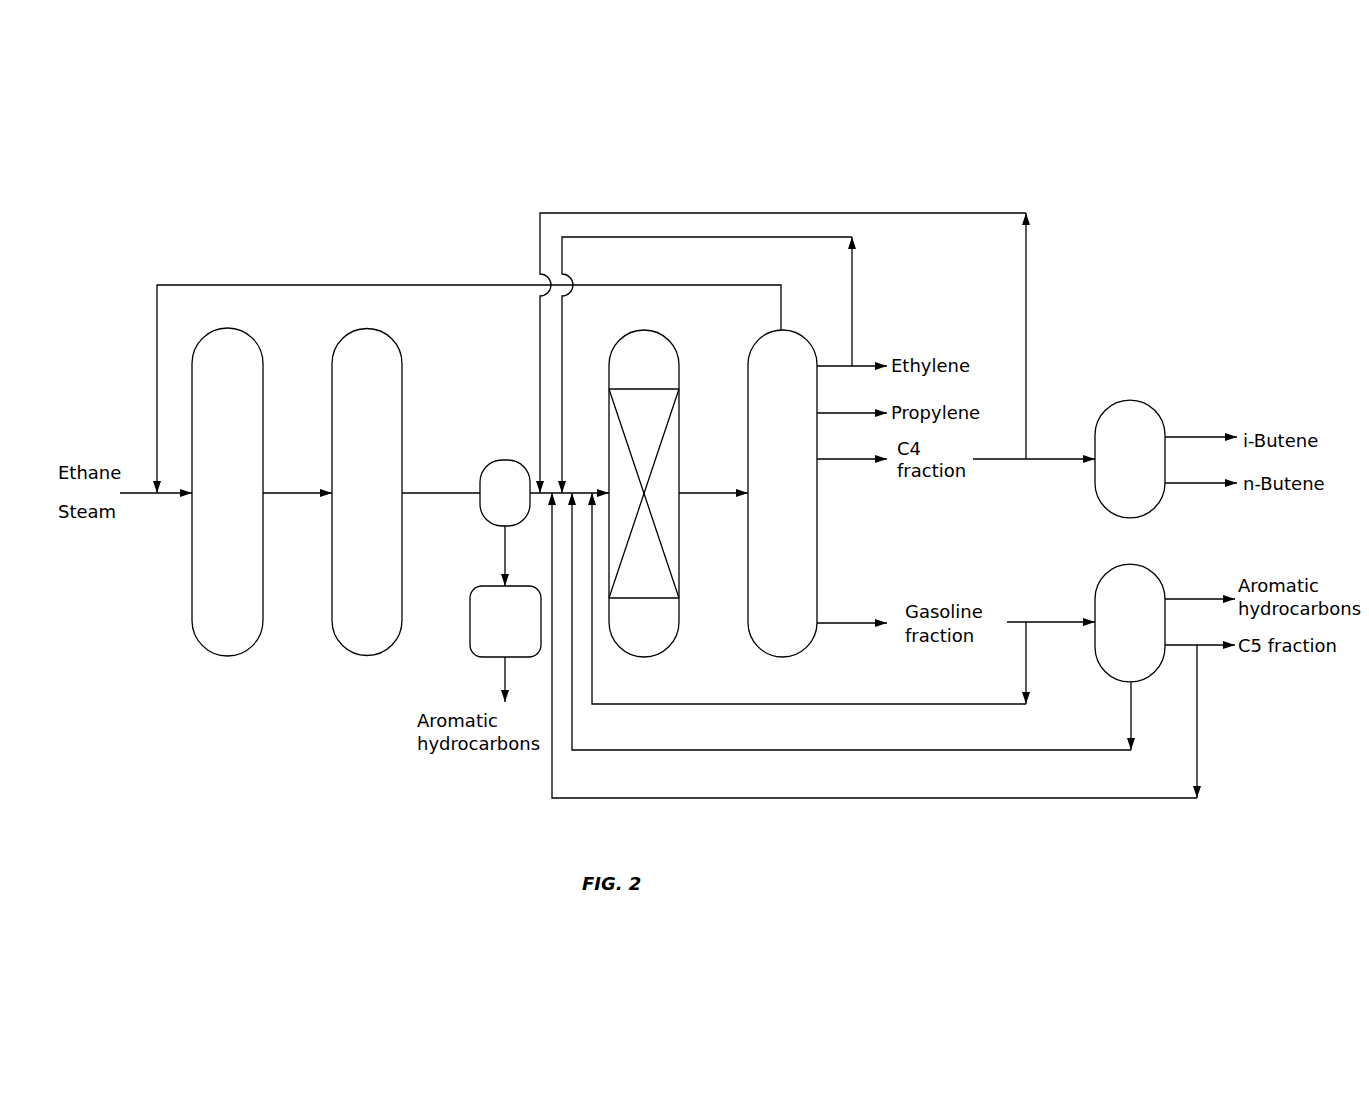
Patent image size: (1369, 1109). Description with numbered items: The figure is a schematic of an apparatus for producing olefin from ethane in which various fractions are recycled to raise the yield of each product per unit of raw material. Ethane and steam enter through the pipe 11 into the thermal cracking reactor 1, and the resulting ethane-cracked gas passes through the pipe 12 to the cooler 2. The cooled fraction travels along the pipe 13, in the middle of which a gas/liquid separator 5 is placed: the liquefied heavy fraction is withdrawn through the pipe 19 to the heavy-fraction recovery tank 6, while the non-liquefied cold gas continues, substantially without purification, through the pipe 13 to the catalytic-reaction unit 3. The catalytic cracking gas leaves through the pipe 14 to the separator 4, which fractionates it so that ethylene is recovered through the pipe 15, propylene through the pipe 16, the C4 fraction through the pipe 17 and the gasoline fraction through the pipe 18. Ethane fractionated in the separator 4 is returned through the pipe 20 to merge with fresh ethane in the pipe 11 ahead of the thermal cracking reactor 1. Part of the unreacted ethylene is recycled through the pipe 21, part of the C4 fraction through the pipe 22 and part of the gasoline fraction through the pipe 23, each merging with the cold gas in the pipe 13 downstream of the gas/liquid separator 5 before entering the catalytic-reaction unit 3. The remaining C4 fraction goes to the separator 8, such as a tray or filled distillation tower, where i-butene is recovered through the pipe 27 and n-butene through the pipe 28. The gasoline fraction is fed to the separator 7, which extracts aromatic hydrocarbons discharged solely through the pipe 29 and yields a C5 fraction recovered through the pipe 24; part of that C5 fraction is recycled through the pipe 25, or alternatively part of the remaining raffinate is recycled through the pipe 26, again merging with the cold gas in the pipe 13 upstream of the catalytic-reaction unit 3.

The thermal cracking reactor 1 is at (227, 656).
The cooler 2 is at (365, 656).
The catalytic-reaction unit 3 is at (642, 657).
The separator 4 is at (780, 657).
The gas/liquid separator 5 is at (503, 460).
The heavy-fraction recovery tank 6 is at (470, 623).
The separator 7 is at (1130, 564).
The separator 8 is at (1130, 402).
The pipe for supplying ethane and steam to thermal cracking reactor 11 is at (156, 506).
The pipe for supplying ethane-cracked gas to cooler 12 is at (297, 506).
The pipe for supplying cold fraction or cold gas to catalytic-reaction unit 13 is at (505, 489).
The pipe for supplying catalytic cracking gas to separator 14 is at (713, 506).
The pipe for recovering ethylene from separator 15 is at (852, 378).
The pipe for recovering propylene from separator 16 is at (852, 426).
The pipe for recovering C4 fraction from separator 17 is at (956, 472).
The pipe for recovering gasoline fraction from separator 18 is at (956, 621).
The pipe for recovering heavy fraction from cold fraction 19 is at (523, 556).
The pipe for recycling ethane 20 is at (484, 389).
The pipe for recycling ethylene 21 is at (726, 365).
The pipe for recycling C4 fraction 22 is at (801, 353).
The pipe for recycling gasoline fraction 23 is at (827, 598).
The pipe for recovering C5 fraction 24 is at (1200, 633).
The pipe for recycling C5 fraction 25 is at (892, 645).
The pipe for recycling raffinate 26 is at (868, 621).
The pipe for recovering i-butene 27 is at (1201, 425).
The pipe for recovering n-butene 28 is at (1201, 470).
The pipe for recovering aromatic hydrocarbons 29 is at (1200, 586).